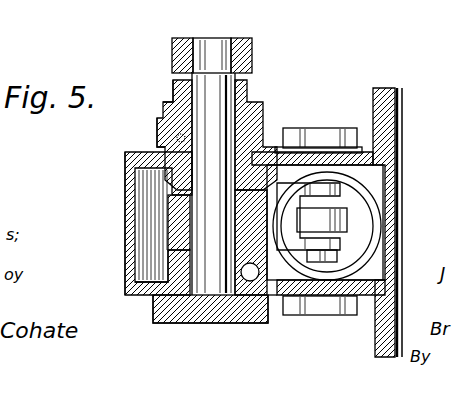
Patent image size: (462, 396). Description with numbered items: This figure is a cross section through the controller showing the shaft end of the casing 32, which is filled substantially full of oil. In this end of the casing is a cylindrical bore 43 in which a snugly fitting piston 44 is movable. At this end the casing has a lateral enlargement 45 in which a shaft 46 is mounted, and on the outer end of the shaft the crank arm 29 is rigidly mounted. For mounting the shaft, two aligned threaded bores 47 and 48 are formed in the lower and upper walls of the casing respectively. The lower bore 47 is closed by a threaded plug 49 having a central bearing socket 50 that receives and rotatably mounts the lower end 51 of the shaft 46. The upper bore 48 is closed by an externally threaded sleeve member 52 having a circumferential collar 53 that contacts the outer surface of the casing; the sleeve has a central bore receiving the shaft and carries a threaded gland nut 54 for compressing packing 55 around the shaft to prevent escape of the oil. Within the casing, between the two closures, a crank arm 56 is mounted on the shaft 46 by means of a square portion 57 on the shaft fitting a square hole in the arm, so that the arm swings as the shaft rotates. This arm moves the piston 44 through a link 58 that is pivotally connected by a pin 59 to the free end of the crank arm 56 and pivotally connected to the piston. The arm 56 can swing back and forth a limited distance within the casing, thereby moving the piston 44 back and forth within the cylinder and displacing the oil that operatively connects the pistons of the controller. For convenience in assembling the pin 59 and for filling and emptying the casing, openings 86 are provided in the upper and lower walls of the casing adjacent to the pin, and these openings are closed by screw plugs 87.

The crank arm 29 is at (252, 52).
The gland nut 54 is at (176, 90).
The sleeve member 52 is at (165, 118).
The circumferential collar 53 is at (163, 130).
The threaded bore 47 is at (160, 147).
The packing 55 is at (263, 130).
The casing 32 is at (135, 160).
The shaft 46 is at (200, 178).
The lateral enlargement 45 is at (126, 238).
The threaded bore 48 is at (172, 287).
The square portion 57 is at (195, 218).
The crank arm 56 is at (259, 295).
The threaded plug 49 is at (160, 316).
The bearing socket 50 is at (185, 300).
The lower end of the shaft 51 is at (213, 285).
The link 58 is at (333, 220).
The cylindrical bore 43 is at (377, 237).
The piston 44 is at (367, 250).
The pin 59 is at (323, 263).
The openings 86 is at (292, 158).
The screw plugs 87 is at (343, 316).